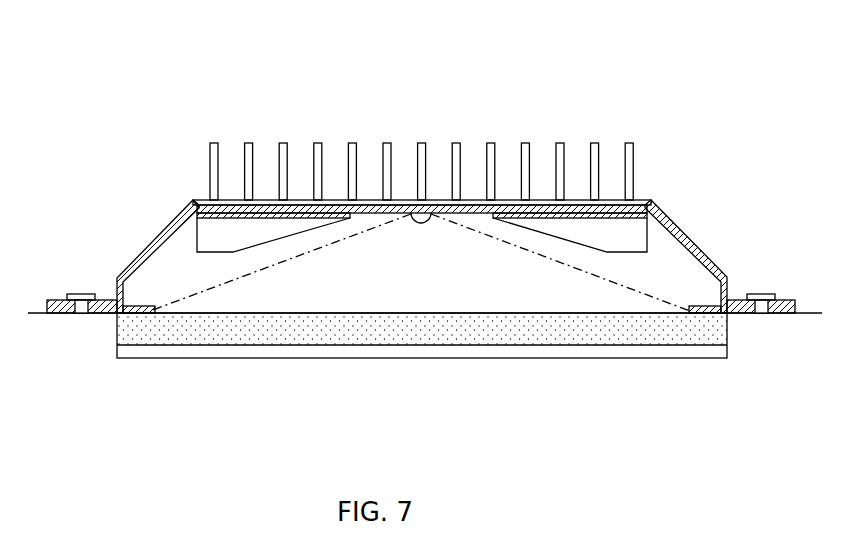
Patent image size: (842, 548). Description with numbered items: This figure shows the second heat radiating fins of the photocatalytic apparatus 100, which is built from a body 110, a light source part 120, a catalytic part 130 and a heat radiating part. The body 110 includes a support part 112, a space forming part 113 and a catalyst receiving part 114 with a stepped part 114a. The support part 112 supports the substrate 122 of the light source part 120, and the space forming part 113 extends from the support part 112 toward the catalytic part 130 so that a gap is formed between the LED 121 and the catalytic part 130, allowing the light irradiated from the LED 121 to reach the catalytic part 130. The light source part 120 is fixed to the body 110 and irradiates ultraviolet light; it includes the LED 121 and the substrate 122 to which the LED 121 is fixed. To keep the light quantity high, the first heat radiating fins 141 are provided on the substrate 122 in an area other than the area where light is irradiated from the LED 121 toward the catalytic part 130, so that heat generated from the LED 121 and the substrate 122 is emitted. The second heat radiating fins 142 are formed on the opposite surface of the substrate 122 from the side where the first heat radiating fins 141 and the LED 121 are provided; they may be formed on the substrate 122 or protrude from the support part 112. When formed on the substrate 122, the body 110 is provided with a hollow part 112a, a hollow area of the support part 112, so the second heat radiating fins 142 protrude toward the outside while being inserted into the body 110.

The photocatalytic apparatus 100 is at (141, 73).
The body 110 is at (795, 218).
The support part 112 is at (634, 203).
The hollow part 112a is at (205, 199).
The space forming part 113 is at (680, 228).
The catalyst receiving part 114 is at (735, 300).
The stepped part 114a is at (716, 306).
The light source part 120 is at (348, 90).
The LED 121 is at (420, 212).
The substrate 122 is at (363, 204).
The catalytic part 130 is at (422, 333).
The first heat radiating fin 141 is at (578, 230).
The second heat radiating fin 142 is at (628, 143).